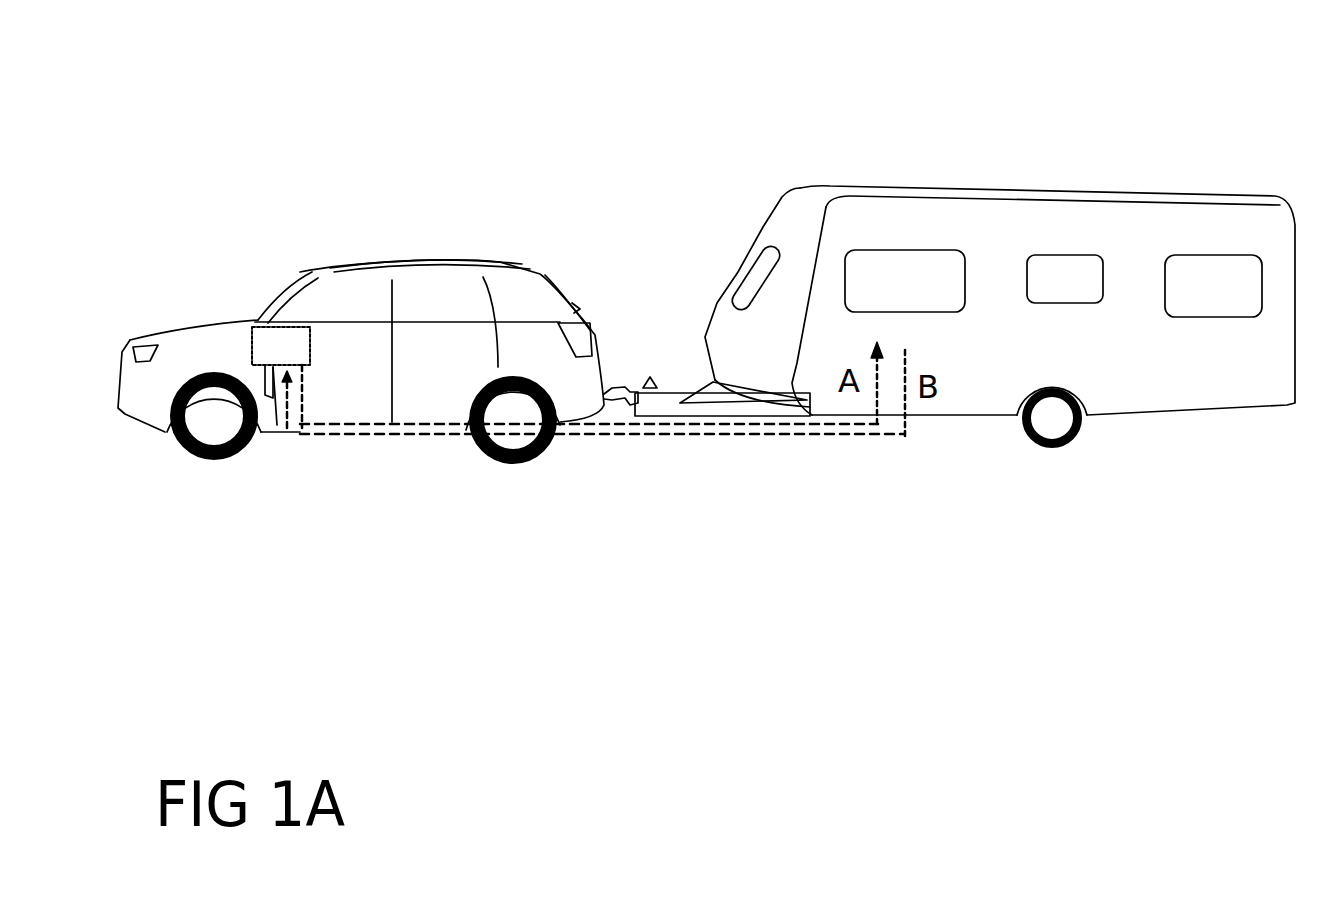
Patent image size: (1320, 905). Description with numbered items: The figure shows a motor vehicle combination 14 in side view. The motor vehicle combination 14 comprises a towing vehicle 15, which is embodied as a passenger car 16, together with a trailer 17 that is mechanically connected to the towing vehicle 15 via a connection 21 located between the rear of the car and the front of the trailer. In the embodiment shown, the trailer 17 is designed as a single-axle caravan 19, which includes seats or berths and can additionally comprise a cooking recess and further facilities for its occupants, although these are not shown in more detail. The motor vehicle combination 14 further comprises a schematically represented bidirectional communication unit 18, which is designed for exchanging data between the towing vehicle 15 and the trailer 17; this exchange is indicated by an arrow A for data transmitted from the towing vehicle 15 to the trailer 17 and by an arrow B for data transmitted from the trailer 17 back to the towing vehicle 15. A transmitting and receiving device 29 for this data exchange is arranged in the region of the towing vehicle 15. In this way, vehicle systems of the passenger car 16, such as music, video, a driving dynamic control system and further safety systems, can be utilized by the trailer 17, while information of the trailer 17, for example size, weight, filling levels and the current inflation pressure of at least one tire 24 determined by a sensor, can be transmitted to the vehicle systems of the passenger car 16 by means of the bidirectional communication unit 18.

The motor vehicle combination 14 is at (404, 142).
The towing vehicle 15 is at (578, 305).
The passenger car 16 is at (578, 306).
The trailer 17 is at (786, 230).
The bidirectional communication unit 18 is at (340, 455).
The single-axle caravan 19 is at (1030, 233).
The connection 21 is at (657, 385).
The tire 24 is at (1080, 430).
The transmitting and receiving device 29 is at (272, 356).